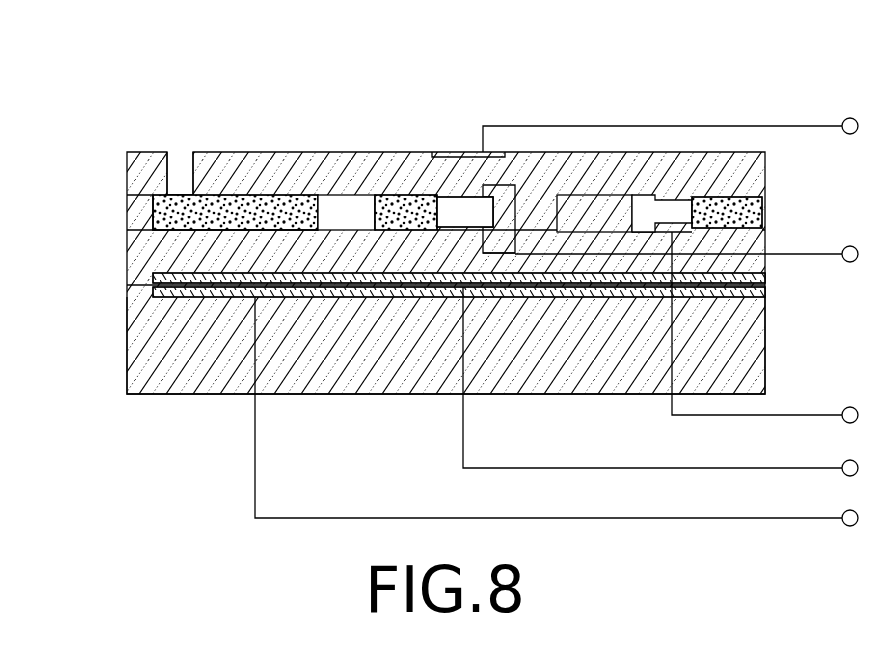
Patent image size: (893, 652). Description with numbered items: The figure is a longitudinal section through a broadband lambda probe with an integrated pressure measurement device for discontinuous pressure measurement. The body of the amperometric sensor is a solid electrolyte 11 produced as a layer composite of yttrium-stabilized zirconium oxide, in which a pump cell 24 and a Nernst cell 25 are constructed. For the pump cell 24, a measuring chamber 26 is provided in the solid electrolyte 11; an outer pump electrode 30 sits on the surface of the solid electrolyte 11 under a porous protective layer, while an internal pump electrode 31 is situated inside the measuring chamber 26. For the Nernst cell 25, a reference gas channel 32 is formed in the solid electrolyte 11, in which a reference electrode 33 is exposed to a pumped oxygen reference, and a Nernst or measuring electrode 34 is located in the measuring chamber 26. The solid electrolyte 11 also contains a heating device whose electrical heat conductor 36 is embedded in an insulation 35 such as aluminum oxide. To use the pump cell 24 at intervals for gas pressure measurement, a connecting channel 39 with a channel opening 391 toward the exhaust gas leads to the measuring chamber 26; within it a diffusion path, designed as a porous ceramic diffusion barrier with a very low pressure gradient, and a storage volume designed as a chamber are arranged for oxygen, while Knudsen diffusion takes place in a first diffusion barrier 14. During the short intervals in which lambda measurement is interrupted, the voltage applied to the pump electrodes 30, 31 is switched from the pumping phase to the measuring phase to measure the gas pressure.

The solid electrolyte 11 is at (210, 365).
The first diffusion barrier 14 is at (403, 197).
The pump cell 24 is at (473, 197).
The Nernst cell 25 is at (490, 253).
The measuring chamber 26 is at (475, 210).
The outer pump electrode 30 is at (452, 195).
The internal pump electrode 31 is at (500, 158).
The reference gas channel 32 is at (735, 196).
The contact recess 33 is at (668, 196).
The Nernst or measuring electrode 34 is at (458, 240).
The insulation 35 is at (153, 283).
The electrical heat conductor 36 is at (183, 290).
The connecting channel 39 is at (197, 232).
The channel opening 391 is at (180, 170).